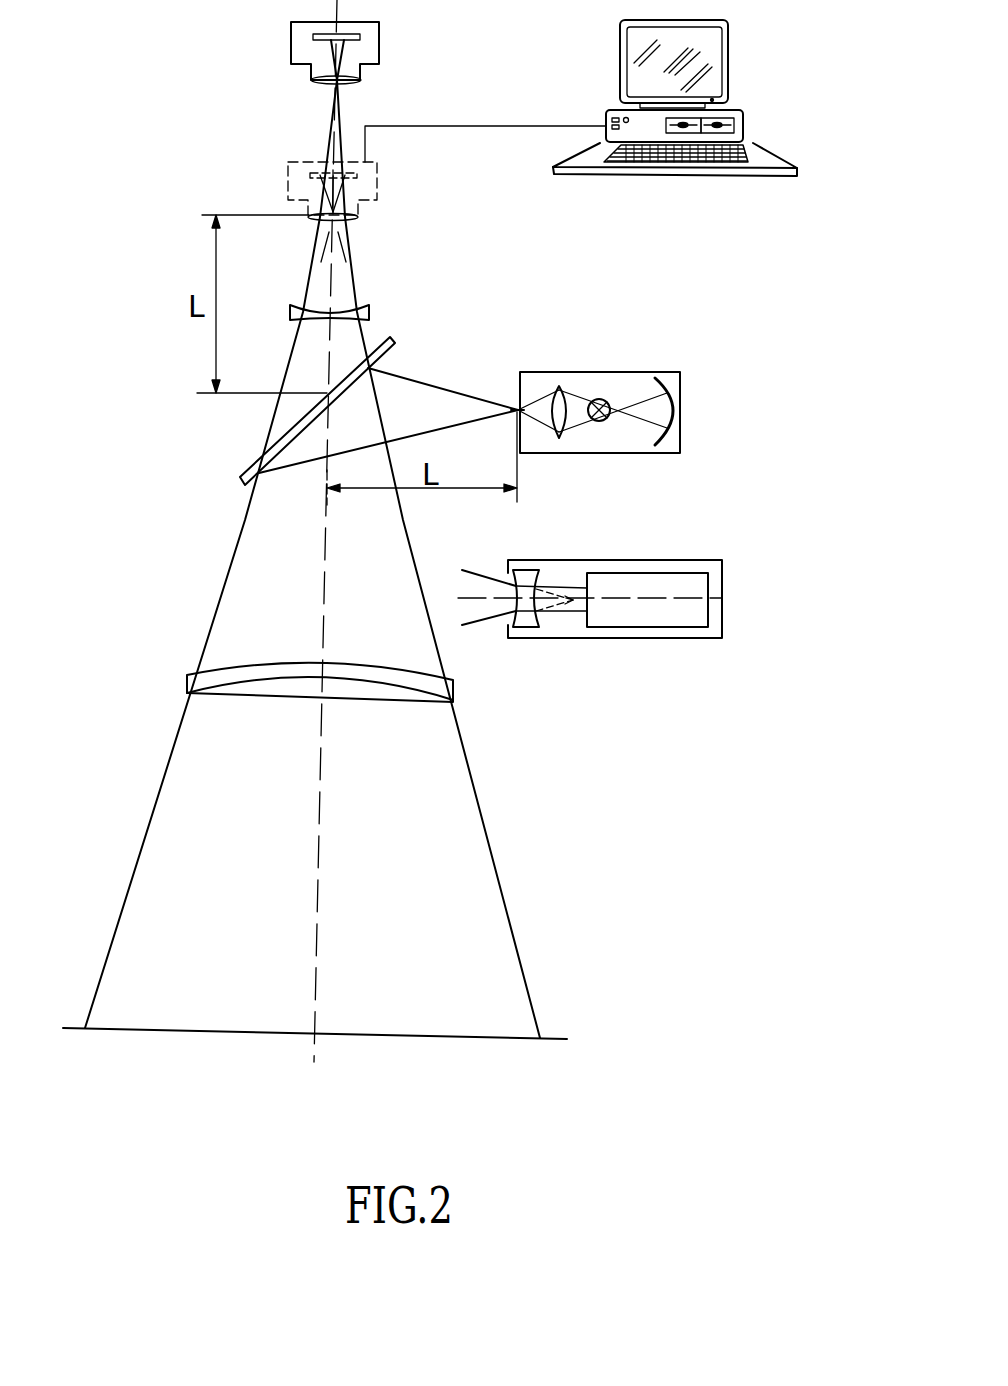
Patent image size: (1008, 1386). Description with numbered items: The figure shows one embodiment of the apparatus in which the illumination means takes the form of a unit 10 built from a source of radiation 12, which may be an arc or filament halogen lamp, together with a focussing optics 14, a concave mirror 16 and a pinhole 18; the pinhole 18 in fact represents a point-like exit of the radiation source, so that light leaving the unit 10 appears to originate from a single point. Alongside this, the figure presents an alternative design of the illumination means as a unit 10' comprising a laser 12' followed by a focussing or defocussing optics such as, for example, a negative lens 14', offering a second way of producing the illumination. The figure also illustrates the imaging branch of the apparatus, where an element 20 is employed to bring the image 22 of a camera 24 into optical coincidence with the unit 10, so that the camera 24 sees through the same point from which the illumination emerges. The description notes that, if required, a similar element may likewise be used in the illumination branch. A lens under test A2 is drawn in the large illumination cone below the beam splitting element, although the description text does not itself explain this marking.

The unit 10 is at (664, 392).
The unit 10' is at (682, 585).
The source of radiation 12 is at (620, 363).
The laser 12' is at (642, 556).
The focussing optics 14 is at (577, 361).
The negative lens 14' is at (501, 566).
The concave mirror 16 is at (672, 397).
The pinhole 18 is at (517, 406).
The element 20 is at (290, 309).
The image 22 is at (291, 183).
The camera 24 is at (293, 44).
The test lens A2 is at (187, 685).